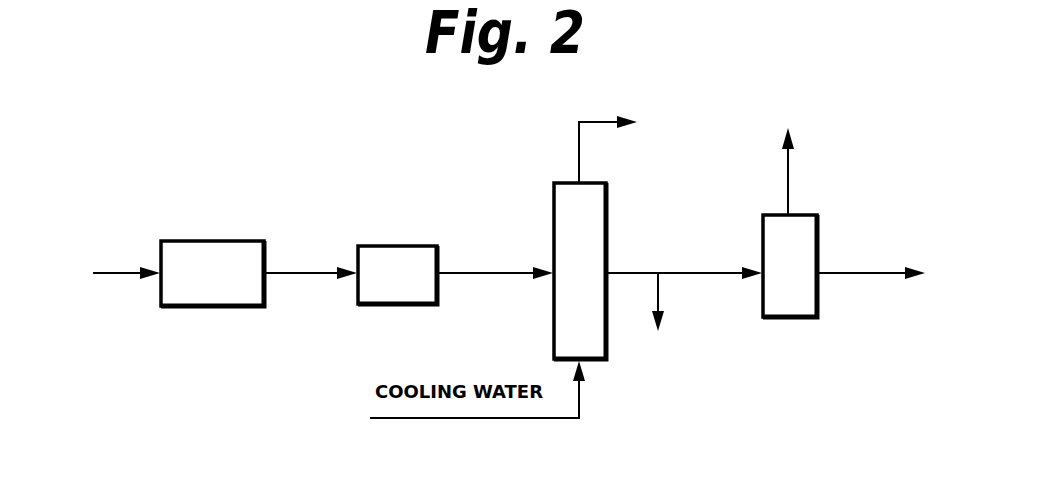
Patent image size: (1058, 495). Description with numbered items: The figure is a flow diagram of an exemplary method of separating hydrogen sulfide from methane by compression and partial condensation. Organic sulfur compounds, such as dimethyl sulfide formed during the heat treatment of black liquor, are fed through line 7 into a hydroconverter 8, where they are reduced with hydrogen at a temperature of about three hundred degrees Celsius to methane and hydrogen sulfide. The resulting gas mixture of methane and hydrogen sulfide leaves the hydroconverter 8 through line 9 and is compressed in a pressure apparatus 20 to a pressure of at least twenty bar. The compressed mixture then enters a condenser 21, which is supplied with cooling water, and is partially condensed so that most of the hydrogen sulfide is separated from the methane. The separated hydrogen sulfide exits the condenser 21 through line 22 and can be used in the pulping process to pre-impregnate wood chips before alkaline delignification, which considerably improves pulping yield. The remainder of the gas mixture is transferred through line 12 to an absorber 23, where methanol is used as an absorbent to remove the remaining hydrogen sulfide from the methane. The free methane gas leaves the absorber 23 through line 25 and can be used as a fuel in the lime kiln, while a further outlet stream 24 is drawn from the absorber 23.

The line 7 is at (121, 276).
The hydroconverter 8 is at (203, 240).
The line 9 is at (305, 272).
The pressure apparatus 20 is at (400, 245).
The condenser 21 is at (553, 189).
The line 12 is at (679, 270).
The line 22 is at (663, 292).
The absorber 23 is at (819, 235).
The bottom product outlet line 24 is at (873, 276).
The line 25 is at (790, 187).